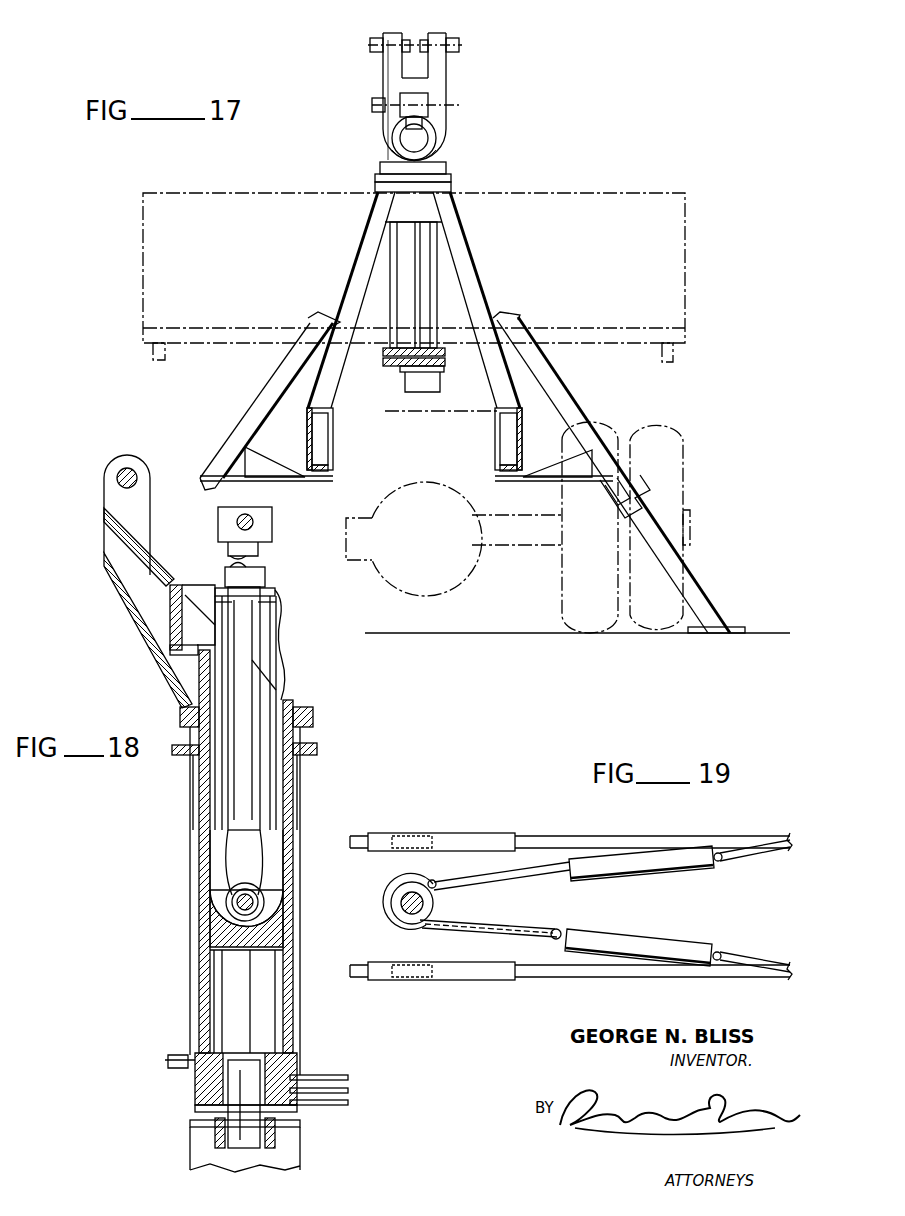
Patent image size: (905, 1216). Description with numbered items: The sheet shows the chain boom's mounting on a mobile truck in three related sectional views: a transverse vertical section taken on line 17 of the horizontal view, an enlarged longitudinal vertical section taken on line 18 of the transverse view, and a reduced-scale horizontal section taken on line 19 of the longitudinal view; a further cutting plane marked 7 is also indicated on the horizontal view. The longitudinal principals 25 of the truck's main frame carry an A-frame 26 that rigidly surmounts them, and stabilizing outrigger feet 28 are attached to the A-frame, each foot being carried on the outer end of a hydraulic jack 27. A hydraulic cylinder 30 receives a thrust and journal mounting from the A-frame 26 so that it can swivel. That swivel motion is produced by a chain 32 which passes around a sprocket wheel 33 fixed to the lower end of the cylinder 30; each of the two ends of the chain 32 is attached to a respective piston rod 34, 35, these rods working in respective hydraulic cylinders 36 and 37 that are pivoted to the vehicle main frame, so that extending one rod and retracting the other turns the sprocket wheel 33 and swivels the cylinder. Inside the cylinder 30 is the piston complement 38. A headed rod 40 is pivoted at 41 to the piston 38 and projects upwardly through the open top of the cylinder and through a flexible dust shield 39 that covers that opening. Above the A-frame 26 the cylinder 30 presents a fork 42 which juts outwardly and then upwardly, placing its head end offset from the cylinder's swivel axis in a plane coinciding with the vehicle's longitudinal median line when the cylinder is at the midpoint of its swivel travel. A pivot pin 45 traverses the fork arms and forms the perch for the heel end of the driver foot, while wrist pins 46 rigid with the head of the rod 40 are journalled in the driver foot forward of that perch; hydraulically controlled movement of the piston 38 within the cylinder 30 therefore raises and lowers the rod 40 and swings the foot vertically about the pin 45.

In FIG. 19, the section line 7 is at (469, 826).
In FIG. 19, the section line 17— 17 is at (495, 1005).
In FIG. 17, the section line 18— 18 is at (385, 18).
In FIG. 18, the section line 19— 19 is at (122, 1048).
In FIG. 17, the longitudinal principals 25 is at (330, 456).
In FIG. 17, the A-frame 26 is at (468, 266).
In FIG. 18, the A-frame 26 is at (195, 1156).
In FIG. 19, the A-frame 26 is at (408, 834).
In FIG. 17, the hydraulic jacks 27 is at (276, 380).
In FIG. 17, the stabilizing outrigger feet 28 is at (746, 627).
In FIG. 17, the hydraulic cylinder 30 is at (400, 262).
In FIG. 18, the hydraulic cylinder 30 is at (200, 986).
In FIG. 17, the chain 32 is at (444, 352).
In FIG. 18, the chain 32 is at (338, 1075).
In FIG. 19, the chain 32 is at (470, 932).
In FIG. 17, the sprocket wheel 33 is at (388, 388).
In FIG. 18, the sprocket wheel 33 is at (304, 1110).
In FIG. 19, the sprocket wheel 33 is at (438, 892).
In FIG. 19, the piston rod 34 is at (514, 878).
In FIG. 19, the piston rod 35 is at (555, 929).
In FIG. 19, the hydraulic cylinder 36 is at (645, 872).
In FIG. 19, the hydraulic cylinder 37 is at (647, 944).
In FIG. 18, the piston complement 38 is at (212, 905).
In FIG. 17, the flexible dust shield 39 is at (432, 142).
In FIG. 18, the flexible dust shield 39 is at (288, 662).
In FIG. 17, the headed rod 40 is at (430, 107).
In FIG. 18, the headed rod 40 is at (256, 574).
In FIG. 18, the pivot 41 is at (234, 896).
In FIG. 17, the fork 42 is at (398, 63).
In FIG. 18, the fork 42 is at (114, 508).
In FIG. 17, the pivot pin 45 is at (372, 44).
In FIG. 18, the pivot pin 45 is at (127, 468).
In FIG. 17, the wrist pins 46 is at (374, 105).
In FIG. 18, the wrist pins 46 is at (254, 522).